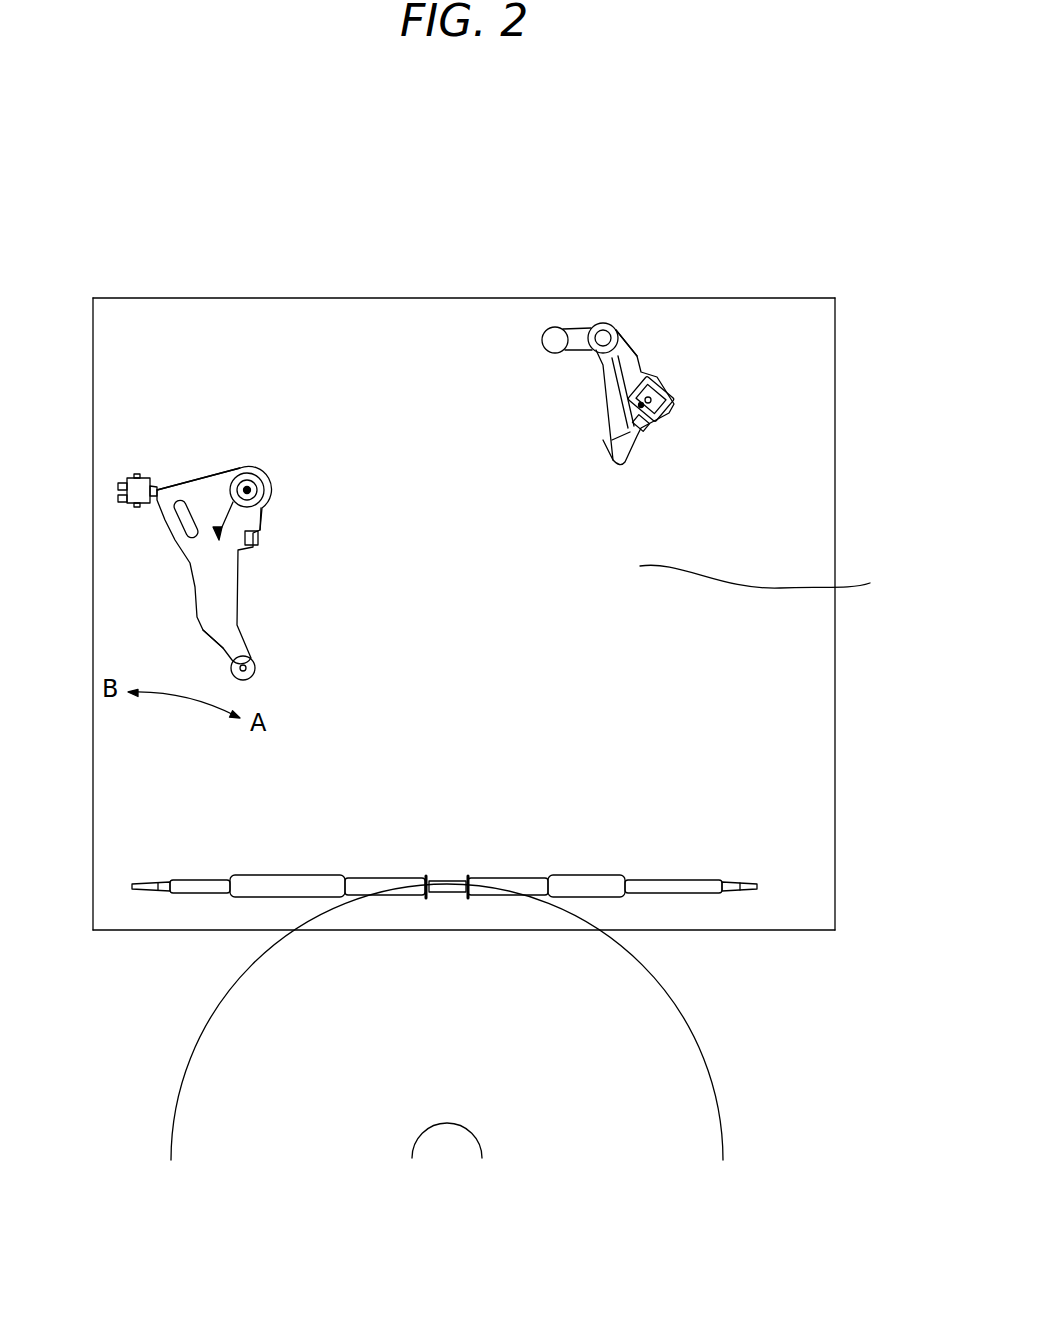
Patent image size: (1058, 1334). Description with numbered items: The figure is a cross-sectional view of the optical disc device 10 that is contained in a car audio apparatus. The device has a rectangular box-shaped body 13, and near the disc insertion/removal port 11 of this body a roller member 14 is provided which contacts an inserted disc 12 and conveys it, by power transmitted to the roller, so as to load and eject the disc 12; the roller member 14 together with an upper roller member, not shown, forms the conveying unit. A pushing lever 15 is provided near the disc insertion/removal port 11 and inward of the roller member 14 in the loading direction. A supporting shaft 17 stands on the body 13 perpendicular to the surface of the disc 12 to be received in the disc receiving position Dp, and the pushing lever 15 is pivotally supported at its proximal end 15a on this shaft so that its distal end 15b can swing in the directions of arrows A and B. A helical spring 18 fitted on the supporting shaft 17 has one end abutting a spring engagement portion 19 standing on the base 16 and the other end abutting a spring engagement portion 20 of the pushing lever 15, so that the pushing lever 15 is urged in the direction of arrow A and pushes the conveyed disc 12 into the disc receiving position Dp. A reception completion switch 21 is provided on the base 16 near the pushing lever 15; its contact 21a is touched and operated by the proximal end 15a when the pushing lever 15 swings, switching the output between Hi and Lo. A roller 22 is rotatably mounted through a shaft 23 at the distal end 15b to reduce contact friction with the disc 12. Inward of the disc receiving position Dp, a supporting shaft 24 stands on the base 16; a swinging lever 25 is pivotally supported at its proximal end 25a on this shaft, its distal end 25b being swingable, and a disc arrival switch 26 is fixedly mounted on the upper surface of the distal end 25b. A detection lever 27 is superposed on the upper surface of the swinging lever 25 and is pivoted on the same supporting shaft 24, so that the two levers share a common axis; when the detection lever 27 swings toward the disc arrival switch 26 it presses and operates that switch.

The optical disc device 10 is at (218, 272).
The disc insertion/removal port 11 is at (762, 933).
The disc 12 is at (722, 1095).
The body 13 is at (838, 705).
The roller member 14 is at (676, 869).
The pushing lever 15 is at (186, 591).
The proximal end 15a is at (210, 485).
The distal end 15b is at (212, 645).
The base 16 is at (786, 370).
The supporting shaft 17 is at (250, 488).
The helical spring 18 is at (265, 517).
The spring engagement portion 19 is at (205, 535).
The spring engagement portion 20 is at (262, 545).
The reception completion switch 21 is at (108, 472).
The contact 21a is at (155, 485).
The roller 22 is at (258, 660).
The shaft 23 is at (256, 670).
The supporting shaft 24 is at (603, 323).
The swinging lever 25 is at (666, 366).
The proximal end 25a is at (640, 352).
The distal end 25b is at (672, 400).
The disc arrival switch 26 is at (650, 428).
The detection lever 27 is at (594, 453).
The disc receiving position Dp is at (779, 576).